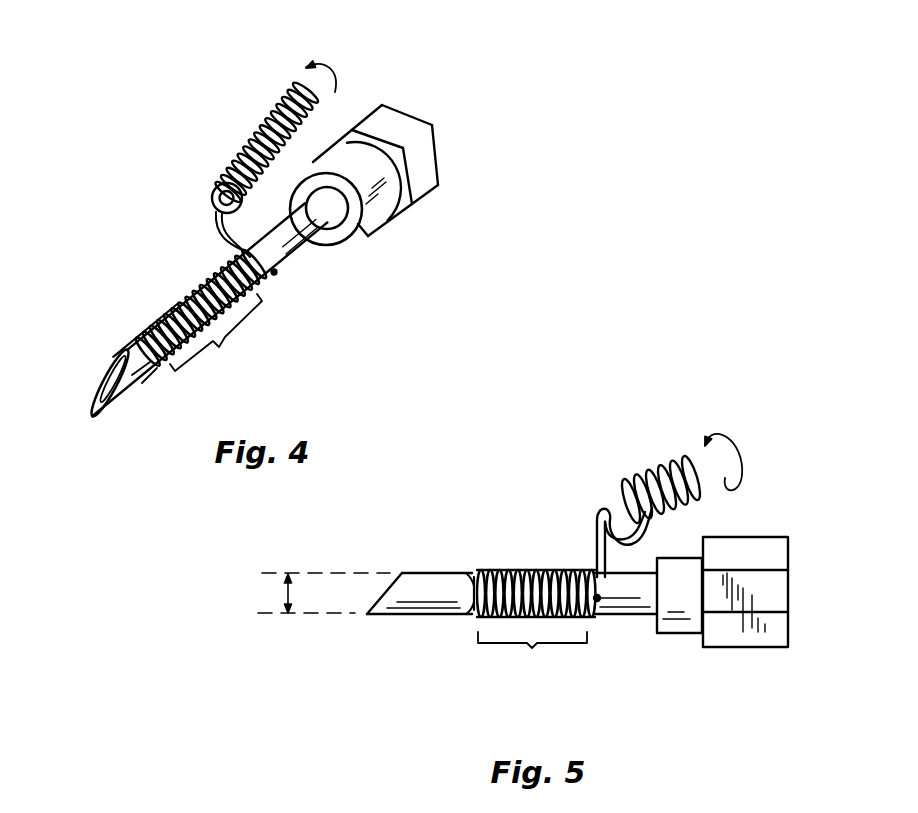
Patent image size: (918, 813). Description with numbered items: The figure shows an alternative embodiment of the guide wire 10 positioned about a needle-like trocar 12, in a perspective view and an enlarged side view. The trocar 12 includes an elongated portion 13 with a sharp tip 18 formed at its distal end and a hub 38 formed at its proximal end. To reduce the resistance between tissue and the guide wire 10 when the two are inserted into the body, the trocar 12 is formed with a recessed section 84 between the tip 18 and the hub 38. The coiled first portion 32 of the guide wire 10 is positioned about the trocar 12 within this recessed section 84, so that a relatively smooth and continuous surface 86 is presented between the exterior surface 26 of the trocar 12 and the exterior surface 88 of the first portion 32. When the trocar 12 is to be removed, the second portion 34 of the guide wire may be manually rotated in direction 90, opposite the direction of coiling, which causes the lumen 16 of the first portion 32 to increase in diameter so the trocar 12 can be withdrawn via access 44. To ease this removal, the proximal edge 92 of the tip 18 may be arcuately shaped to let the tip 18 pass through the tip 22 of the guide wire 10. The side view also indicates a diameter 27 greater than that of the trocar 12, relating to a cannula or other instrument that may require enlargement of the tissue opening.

In FIG. 4, the guide wire 10 is at (225, 158).
In FIG. 4, the trocar 12 is at (303, 256).
In FIG. 5, the trocar 12 is at (640, 620).
In FIG. 4, the elongated portion 13 is at (311, 247).
In FIG. 4, the lumen 16 is at (224, 216).
In FIG. 4, the tip 18 is at (95, 383).
In FIG. 5, the tip 18 is at (392, 586).
In FIG. 5, the tip of the guide wire 22 is at (476, 589).
In FIG. 4, the exterior surface 26 is at (148, 384).
In FIG. 5, the exterior surface 26 is at (418, 596).
In FIG. 5, the diameter 27 is at (283, 593).
In FIG. 4, the first portion 32 is at (192, 293).
In FIG. 5, the first portion 32 is at (557, 568).
In FIG. 4, the second portion 34 is at (266, 118).
In FIG. 5, the second portion 34 is at (653, 470).
In FIG. 4, the hub 38 is at (418, 173).
In FIG. 5, the hub 38 is at (733, 627).
In FIG. 4, the access 44 is at (278, 278).
In FIG. 5, the access 44 is at (600, 602).
In FIG. 4, the recessed section 84 is at (219, 347).
In FIG. 5, the recessed section 84 is at (532, 648).
In FIG. 4, the smooth and continuous surface 86 is at (138, 342).
In FIG. 4, the exterior surface of the first portion 88 is at (222, 278).
In FIG. 4, the direction 90 is at (334, 93).
In FIG. 5, the direction 90 is at (735, 458).
In FIG. 5, the proximal edge 92 is at (470, 573).